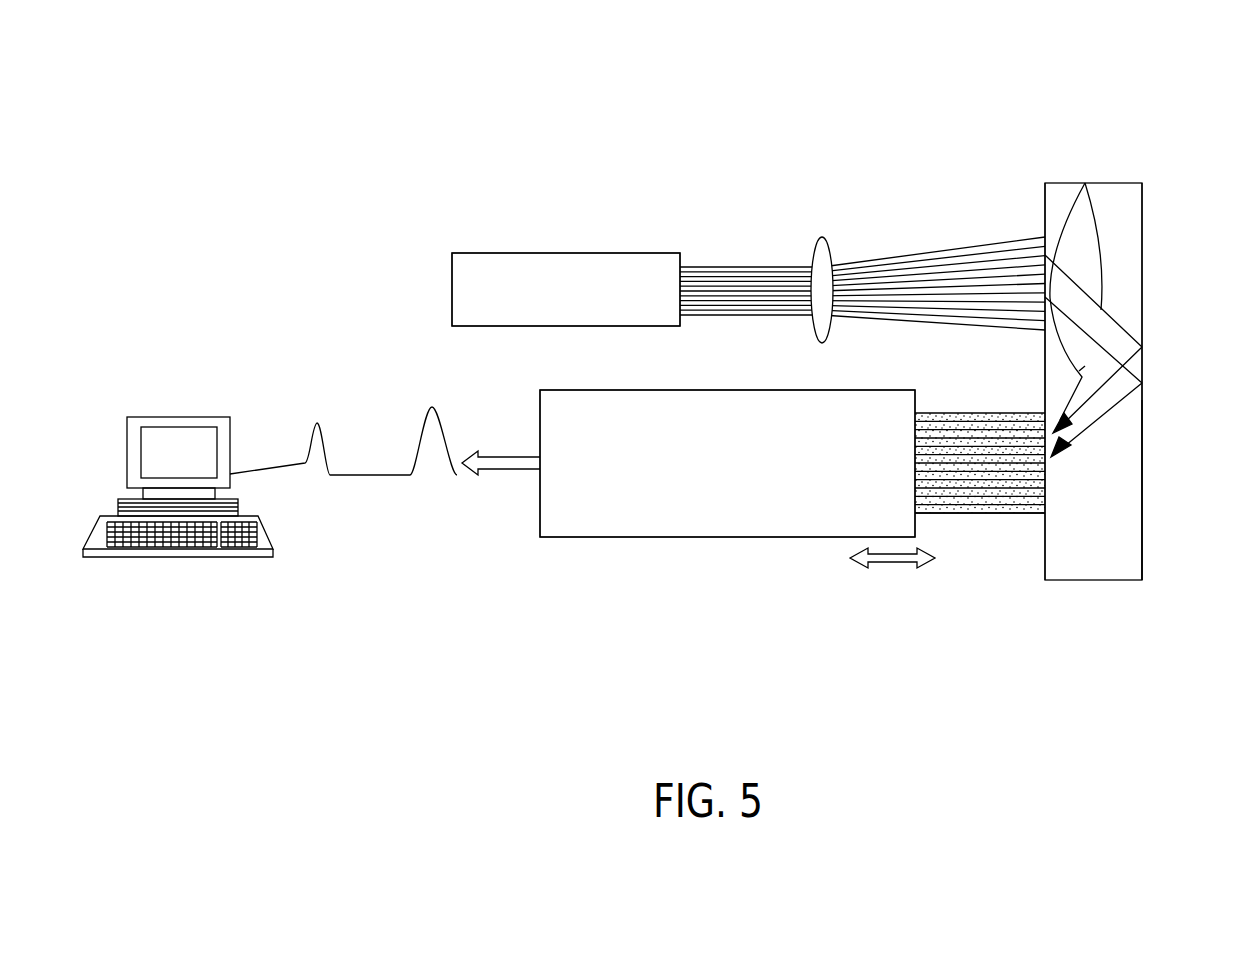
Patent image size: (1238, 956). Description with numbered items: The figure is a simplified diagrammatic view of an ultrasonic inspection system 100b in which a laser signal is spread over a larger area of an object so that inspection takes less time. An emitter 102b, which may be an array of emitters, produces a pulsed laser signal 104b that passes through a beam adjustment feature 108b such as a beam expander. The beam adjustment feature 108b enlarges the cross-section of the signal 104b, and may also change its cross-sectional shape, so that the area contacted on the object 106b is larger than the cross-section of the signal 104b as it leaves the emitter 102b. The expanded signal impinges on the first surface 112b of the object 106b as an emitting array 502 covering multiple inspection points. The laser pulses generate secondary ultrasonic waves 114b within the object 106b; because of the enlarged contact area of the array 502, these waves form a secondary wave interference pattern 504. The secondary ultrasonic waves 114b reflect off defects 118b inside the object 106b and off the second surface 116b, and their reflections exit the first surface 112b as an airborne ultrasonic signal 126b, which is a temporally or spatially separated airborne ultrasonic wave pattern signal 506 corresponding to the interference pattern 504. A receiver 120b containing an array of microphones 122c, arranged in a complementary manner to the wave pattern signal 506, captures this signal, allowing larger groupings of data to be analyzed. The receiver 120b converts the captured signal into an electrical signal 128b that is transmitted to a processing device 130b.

The ultrasonic inspection system 100b is at (430, 147).
The emitter 102b is at (542, 272).
The signal 104b is at (697, 280).
The beam adjustment feature 108b is at (823, 233).
The object 106b is at (1118, 202).
The first surface 112b is at (1050, 205).
The secondary ultrasonic waves 114b is at (1110, 350).
The second surface 116b is at (1142, 433).
The defects 118b is at (1127, 395).
The array 502 is at (1047, 272).
The secondary wave interference pattern 504 is at (1085, 183).
The receiver 120b is at (765, 555).
The array of microphones 122c is at (707, 518).
The airborne ultrasonic signal 126b is at (967, 478).
The airborne ultrasonic wave pattern signal 506 is at (1040, 508).
The electrical signal 128b is at (358, 475).
The processing device 130b is at (132, 417).